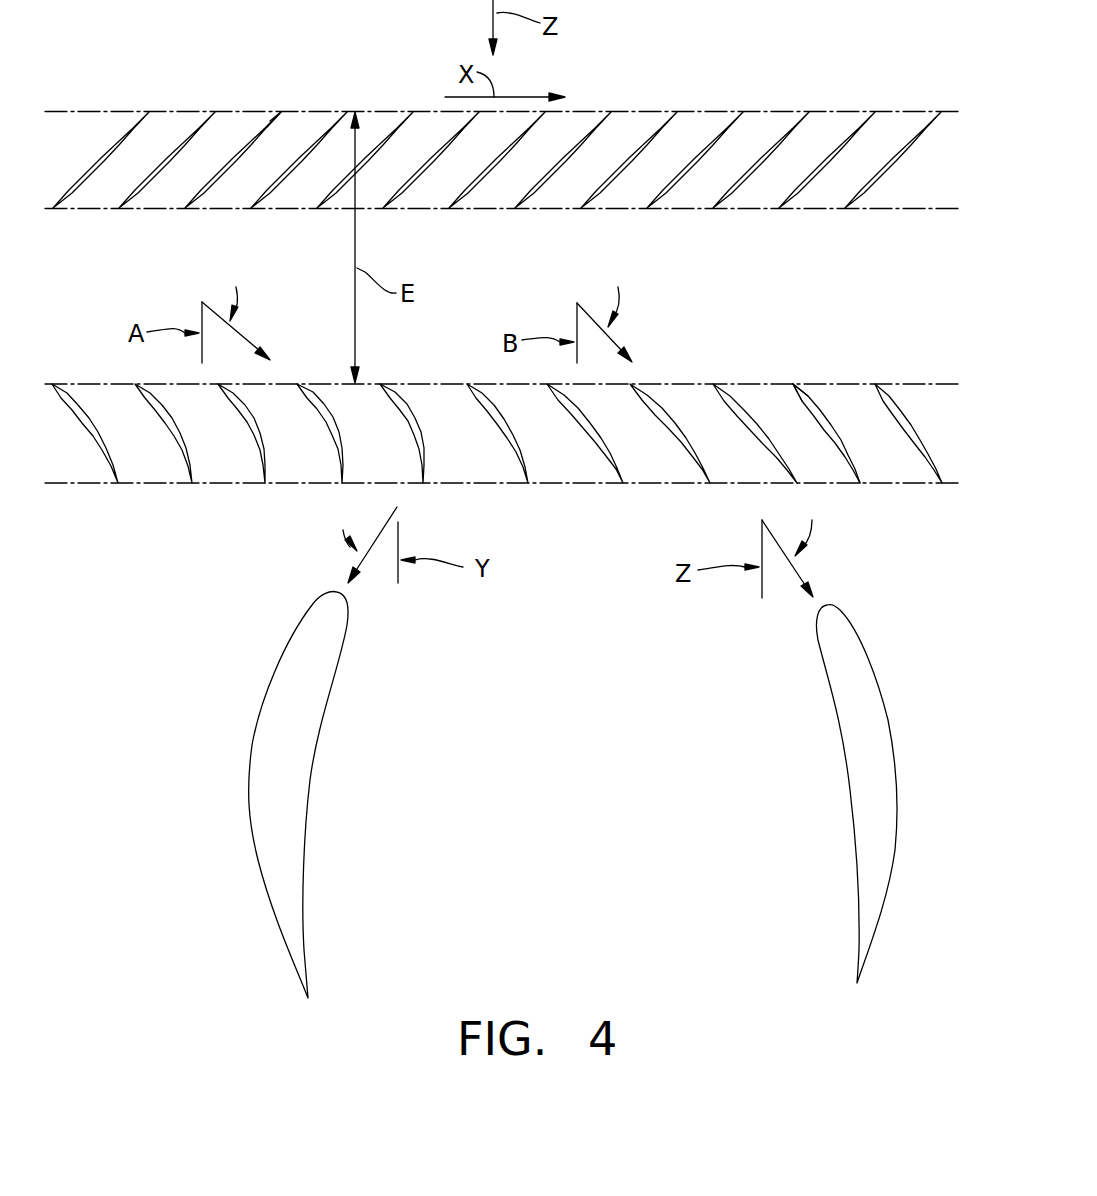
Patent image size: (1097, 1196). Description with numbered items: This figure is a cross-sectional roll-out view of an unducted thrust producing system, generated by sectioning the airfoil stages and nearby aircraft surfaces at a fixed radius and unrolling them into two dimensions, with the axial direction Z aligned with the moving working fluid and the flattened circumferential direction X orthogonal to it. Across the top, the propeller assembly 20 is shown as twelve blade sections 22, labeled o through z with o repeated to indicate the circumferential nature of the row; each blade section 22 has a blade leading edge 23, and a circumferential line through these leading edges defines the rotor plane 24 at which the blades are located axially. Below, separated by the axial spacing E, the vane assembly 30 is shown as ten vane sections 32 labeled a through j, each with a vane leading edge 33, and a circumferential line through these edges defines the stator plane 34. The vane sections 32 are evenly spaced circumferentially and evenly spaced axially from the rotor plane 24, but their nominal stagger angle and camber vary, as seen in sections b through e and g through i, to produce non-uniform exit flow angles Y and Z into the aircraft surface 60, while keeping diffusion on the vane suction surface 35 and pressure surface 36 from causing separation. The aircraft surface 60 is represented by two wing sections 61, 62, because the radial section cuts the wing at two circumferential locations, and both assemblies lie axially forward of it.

The propeller assembly 20 is at (745, 53).
The blade section 22 is at (247, 137).
The blade leading edge 23 is at (277, 112).
The rotor plane 24 is at (102, 111).
The vane assembly 30 is at (710, 343).
The vane section 32 is at (813, 400).
The vane leading edge 33 is at (797, 385).
The stator plane 34 is at (938, 383).
The vane suction surface 35 is at (825, 433).
The vane pressure surface 36 is at (837, 423).
The aircraft surface 60 is at (529, 975).
The wing section 61 is at (305, 807).
The wing section 62 is at (855, 812).